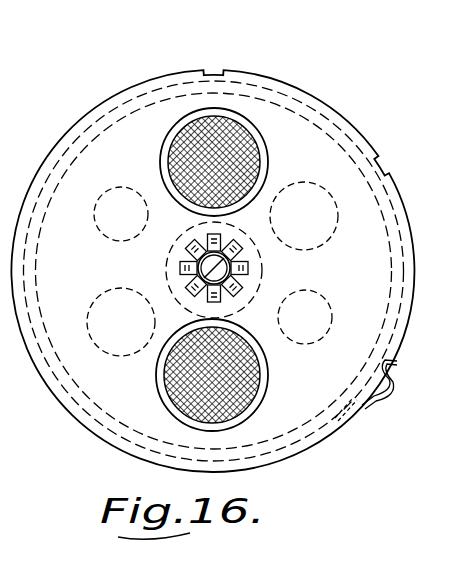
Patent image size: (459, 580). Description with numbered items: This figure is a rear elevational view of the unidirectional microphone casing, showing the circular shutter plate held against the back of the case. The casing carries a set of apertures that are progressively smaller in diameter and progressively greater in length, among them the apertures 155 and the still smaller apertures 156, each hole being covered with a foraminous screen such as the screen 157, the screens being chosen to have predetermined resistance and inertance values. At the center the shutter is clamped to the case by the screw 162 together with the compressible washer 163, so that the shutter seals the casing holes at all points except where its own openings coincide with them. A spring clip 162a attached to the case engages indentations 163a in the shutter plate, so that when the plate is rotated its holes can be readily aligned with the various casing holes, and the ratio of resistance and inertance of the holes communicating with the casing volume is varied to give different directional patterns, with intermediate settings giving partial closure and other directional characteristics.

The aperture 155 is at (338, 227).
The aperture 156 is at (125, 164).
The foraminous screen 157 is at (235, 146).
The screw 162 is at (205, 263).
The spring clip 162a is at (382, 400).
The compressible washer 163 is at (237, 290).
The indentations 163a is at (404, 129).